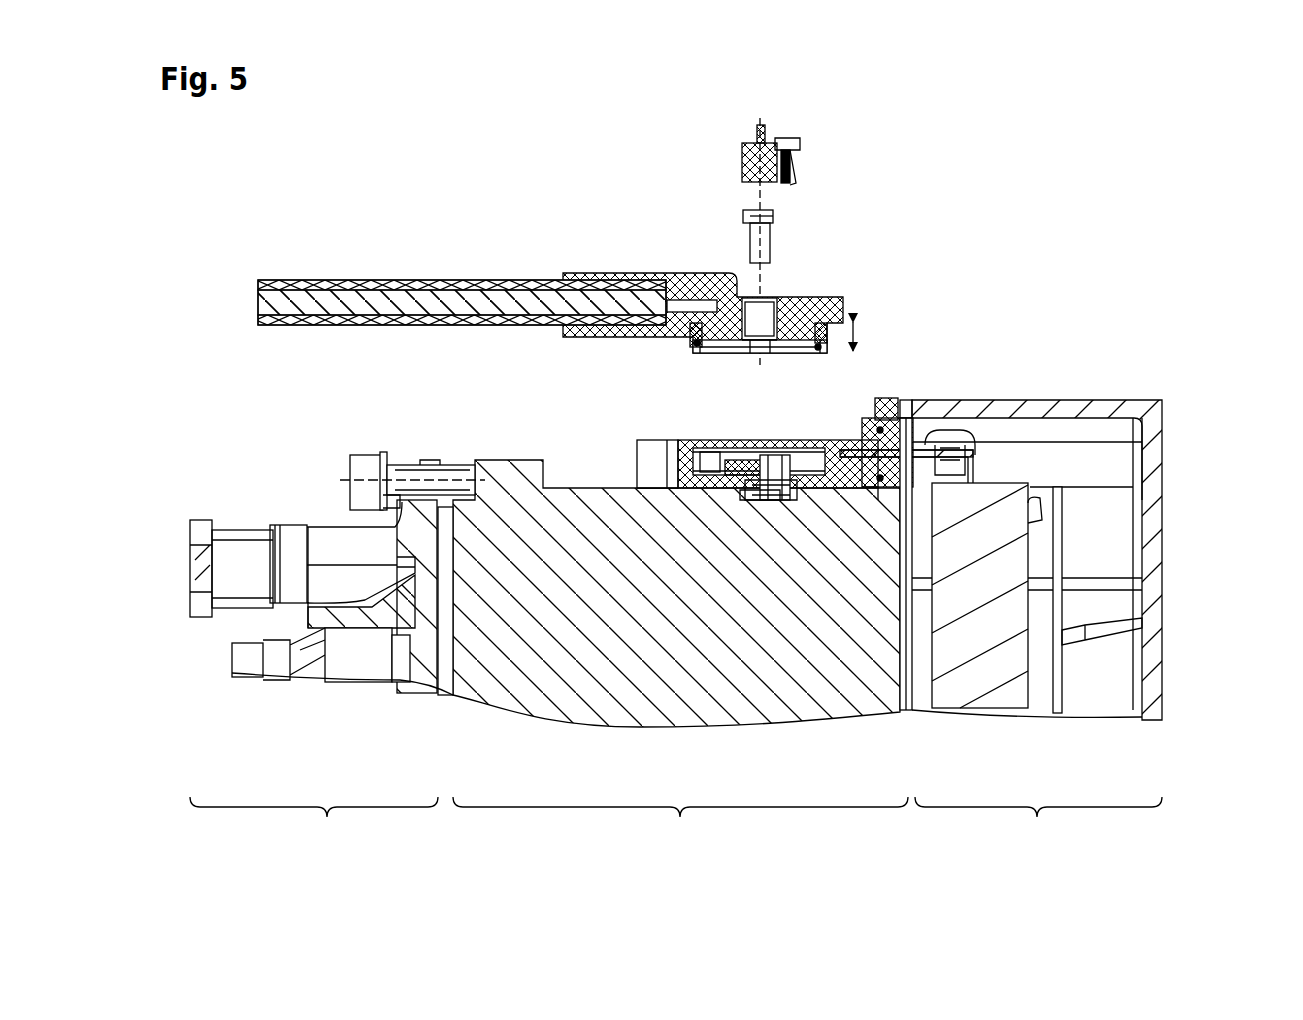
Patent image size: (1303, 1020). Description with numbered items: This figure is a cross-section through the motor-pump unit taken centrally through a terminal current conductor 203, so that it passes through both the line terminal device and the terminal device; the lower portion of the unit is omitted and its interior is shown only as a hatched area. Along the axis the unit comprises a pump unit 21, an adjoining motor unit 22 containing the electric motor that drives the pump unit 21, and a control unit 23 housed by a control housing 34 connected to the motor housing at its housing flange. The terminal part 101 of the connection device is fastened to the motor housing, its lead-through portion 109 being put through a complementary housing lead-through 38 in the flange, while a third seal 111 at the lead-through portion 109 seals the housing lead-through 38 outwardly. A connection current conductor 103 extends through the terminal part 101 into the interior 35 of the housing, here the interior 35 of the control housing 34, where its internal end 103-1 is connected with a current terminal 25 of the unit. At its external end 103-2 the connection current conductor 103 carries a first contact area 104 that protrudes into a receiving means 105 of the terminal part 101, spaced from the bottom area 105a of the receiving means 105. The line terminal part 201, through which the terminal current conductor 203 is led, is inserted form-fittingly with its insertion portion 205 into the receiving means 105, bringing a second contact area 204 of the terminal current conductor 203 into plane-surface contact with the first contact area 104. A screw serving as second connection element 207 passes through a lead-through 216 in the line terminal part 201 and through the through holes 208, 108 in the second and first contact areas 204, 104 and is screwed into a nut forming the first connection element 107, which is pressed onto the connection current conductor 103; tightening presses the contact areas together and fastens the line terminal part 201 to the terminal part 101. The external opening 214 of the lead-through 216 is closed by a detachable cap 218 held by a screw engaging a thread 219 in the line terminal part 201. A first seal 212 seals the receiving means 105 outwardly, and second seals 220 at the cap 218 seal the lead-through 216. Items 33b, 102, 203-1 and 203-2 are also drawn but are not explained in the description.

The pump unit 21 is at (337, 651).
The motor unit 22 is at (676, 655).
The control unit 23 is at (1037, 625).
The current terminal 25 is at (940, 478).
The sealing element 33b is at (887, 406).
The control housing 34 is at (1150, 422).
The interior 35 is at (1115, 470).
The housing lead-through 38 is at (905, 418).
The terminal part 101 is at (665, 465).
The connection piece part 102 is at (648, 476).
The connection current conductor 103 is at (792, 490).
The internal end 103-1 is at (985, 455).
The external end 103-2 is at (717, 490).
The first contact area 104 is at (780, 460).
The receiving means 105 is at (694, 438).
The bottom area 105a is at (714, 468).
The first connection element 107 is at (760, 490).
The through hole 108 is at (757, 460).
The lead-through portion 109 is at (860, 490).
The third seal 111 is at (877, 490).
The line terminal part 201 is at (690, 280).
The terminal current conductor 203 is at (318, 280).
The plate end 203-1 is at (808, 346).
The plate slot 203-2 is at (682, 303).
The second contact area 204 is at (760, 346).
The insertion portion 205 is at (860, 335).
The second connection element 207 is at (774, 215).
The through hole 208 is at (750, 346).
The first seal 212 is at (690, 338).
The external opening 214 is at (745, 300).
The lead-through 216 is at (766, 322).
The cap 218 is at (752, 145).
The thread 219 is at (790, 140).
The second seal 220 is at (742, 163).